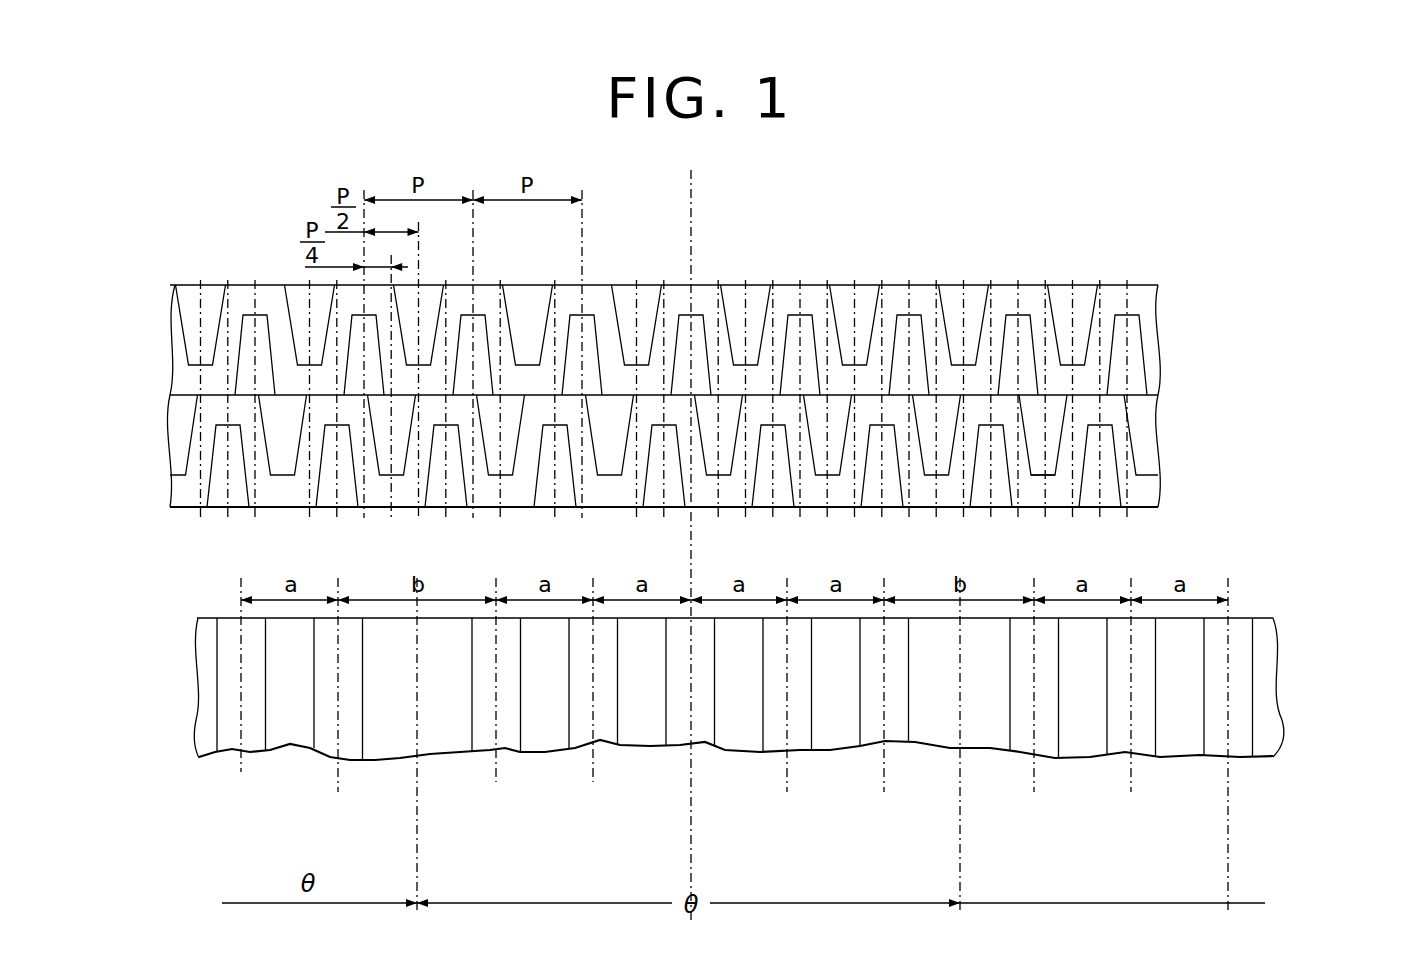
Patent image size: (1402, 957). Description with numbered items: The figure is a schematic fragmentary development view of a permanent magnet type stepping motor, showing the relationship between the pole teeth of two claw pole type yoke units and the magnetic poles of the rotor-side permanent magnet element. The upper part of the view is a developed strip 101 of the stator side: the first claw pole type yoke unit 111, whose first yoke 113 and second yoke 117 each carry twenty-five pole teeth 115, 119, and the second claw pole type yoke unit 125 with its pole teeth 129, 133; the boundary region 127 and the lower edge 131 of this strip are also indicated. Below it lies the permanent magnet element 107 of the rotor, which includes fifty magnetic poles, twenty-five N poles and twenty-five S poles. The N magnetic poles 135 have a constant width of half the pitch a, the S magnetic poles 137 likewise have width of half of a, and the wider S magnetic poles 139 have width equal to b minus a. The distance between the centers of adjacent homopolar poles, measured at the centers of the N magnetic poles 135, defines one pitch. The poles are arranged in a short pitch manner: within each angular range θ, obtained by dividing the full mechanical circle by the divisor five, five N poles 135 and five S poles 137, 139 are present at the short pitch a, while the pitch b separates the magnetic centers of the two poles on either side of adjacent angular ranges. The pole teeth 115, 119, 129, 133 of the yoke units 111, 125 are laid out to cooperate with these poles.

The permanent magnet member (field) 101 is at (1270, 611).
The permanent magnet element 107 is at (1260, 733).
The claw pole type yoke unit 111 is at (1160, 370).
The first yoke 113 is at (1059, 287).
The pole teeth 115 is at (298, 298).
The second yoke 117 is at (1155, 388).
The pole teeth 119 is at (485, 312).
The claw pole type yoke unit 125 is at (1170, 444).
The slot bottom 127 is at (1052, 494).
The pole teeth 129 is at (182, 424).
The second core base 131 is at (1130, 503).
The pole teeth 133 is at (222, 494).
The N magnetic poles 135 is at (228, 752).
The S magnetic poles 137 is at (287, 742).
The S magnetic poles 139 is at (437, 747).